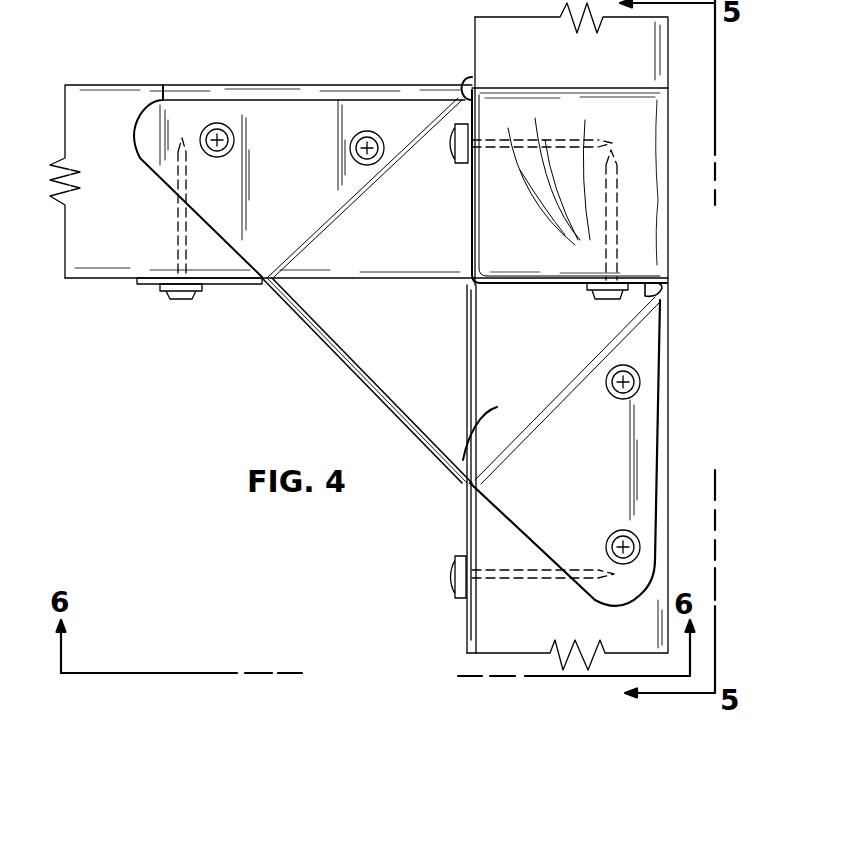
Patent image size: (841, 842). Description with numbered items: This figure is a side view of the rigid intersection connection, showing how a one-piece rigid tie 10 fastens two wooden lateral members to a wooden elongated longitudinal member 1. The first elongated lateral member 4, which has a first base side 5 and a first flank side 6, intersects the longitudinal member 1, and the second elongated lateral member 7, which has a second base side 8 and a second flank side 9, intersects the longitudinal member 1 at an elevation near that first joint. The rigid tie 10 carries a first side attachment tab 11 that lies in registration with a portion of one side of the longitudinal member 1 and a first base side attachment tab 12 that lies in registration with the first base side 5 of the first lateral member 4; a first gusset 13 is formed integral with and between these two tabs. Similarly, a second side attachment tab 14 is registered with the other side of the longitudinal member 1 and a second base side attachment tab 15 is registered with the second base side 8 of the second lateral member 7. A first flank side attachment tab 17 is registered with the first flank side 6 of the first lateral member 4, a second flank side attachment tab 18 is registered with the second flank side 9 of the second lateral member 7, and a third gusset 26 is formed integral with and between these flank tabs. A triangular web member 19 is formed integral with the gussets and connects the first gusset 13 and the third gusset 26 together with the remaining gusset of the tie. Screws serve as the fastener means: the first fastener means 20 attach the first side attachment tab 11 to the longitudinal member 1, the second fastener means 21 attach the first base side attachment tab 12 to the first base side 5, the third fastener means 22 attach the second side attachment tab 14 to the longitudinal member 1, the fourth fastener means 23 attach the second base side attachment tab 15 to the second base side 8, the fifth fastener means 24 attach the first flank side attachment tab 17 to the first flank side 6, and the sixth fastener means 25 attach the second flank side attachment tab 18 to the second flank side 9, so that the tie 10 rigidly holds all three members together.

The elongated longitudinal member 1 is at (466, 31).
The first elongated lateral member 4 is at (636, 82).
The first base side 5 is at (660, 292).
The first flank side 6 is at (480, 88).
The second elongated lateral member 7 is at (92, 78).
The second base side 8 is at (80, 280).
The second flank side 9 is at (114, 196).
The one-piece rigid tie 10 is at (312, 356).
The first side attachment tab 11 is at (653, 550).
The first base side attachment tab 12 is at (503, 287).
The first gusset 13 is at (448, 478).
The second side attachment tab 14 is at (463, 522).
The second base side attachment tab 15 is at (145, 285).
The first flank side attachment tab 17 is at (467, 210).
The second flank side attachment tab 18 is at (167, 83).
The triangular web member 19 is at (390, 378).
The first fastener means 20 is at (606, 540).
The second fastener means 21 is at (616, 246).
The third fastener means 22 is at (455, 590).
The fourth fastener means 23 is at (198, 296).
The fifth fastener means 24 is at (575, 134).
The sixth fastener means 25 is at (350, 148).
The third gusset 26 is at (347, 245).